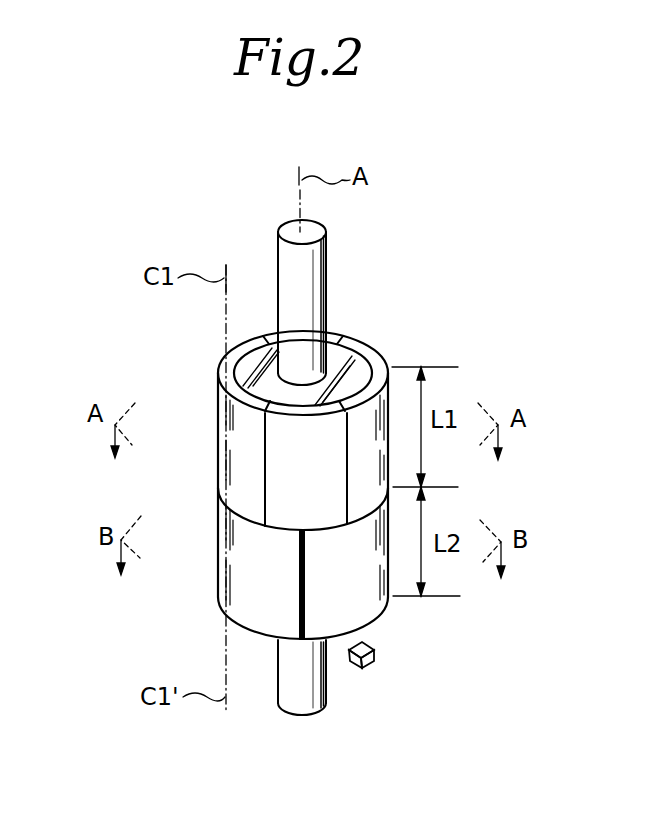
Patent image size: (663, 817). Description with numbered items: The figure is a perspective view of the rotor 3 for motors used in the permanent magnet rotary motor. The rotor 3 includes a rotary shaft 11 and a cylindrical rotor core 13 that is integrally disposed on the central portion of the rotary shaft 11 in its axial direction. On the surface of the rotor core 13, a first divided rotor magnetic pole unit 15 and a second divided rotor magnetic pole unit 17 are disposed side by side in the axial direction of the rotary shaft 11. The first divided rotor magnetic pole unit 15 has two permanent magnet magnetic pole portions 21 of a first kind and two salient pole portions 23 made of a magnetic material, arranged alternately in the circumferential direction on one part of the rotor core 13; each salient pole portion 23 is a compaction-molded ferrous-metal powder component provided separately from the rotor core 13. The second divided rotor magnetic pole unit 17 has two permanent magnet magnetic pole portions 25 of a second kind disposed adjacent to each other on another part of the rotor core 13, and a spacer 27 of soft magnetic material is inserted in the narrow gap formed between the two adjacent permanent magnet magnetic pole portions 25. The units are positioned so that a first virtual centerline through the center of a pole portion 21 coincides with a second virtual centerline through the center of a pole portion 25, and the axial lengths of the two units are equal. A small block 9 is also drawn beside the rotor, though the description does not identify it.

The rotor for motors 3 is at (208, 358).
The magnetic sensor 9 is at (370, 662).
The rotary shaft 11 is at (326, 250).
The rotor core 13 is at (343, 346).
The first divided rotor magnetic pole unit 15 is at (208, 408).
The second divided rotor magnetic pole unit 17 is at (210, 603).
The permanent magnet magnetic pole portion of a first kind 21 is at (385, 362).
The salient pole portion 23 is at (263, 335).
The permanent magnet magnetic pole portion of a second kind 25 is at (228, 612).
The spacer 27 is at (300, 595).